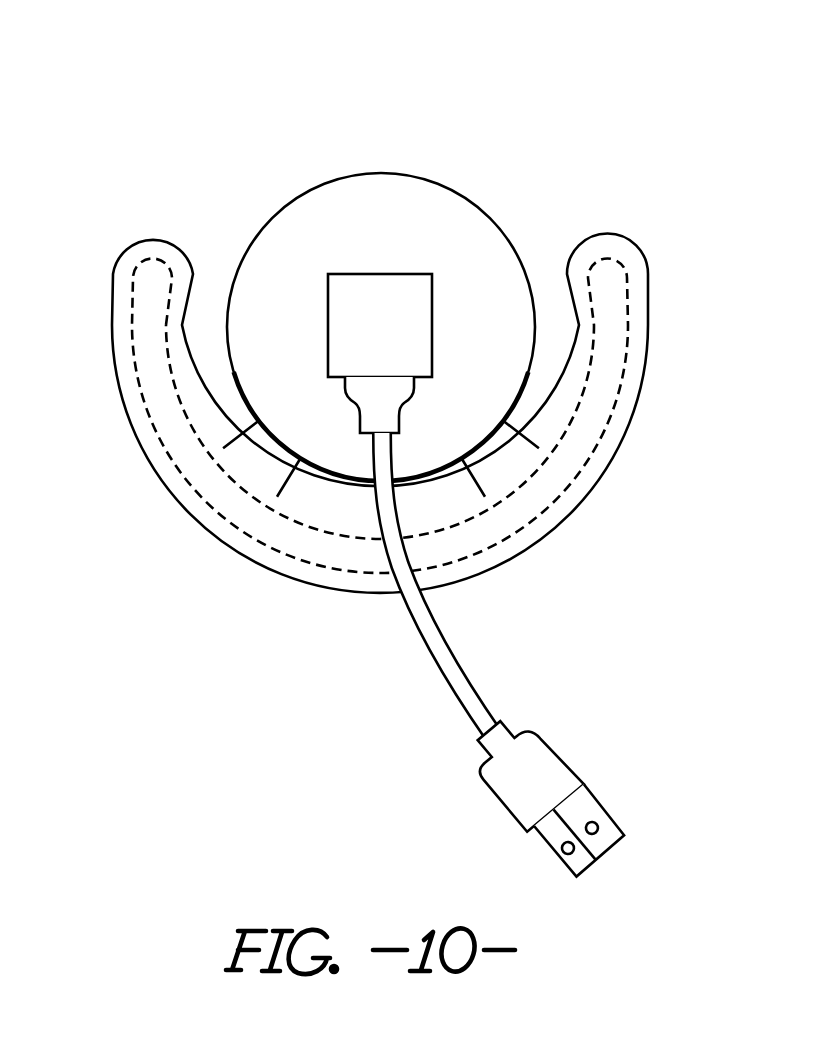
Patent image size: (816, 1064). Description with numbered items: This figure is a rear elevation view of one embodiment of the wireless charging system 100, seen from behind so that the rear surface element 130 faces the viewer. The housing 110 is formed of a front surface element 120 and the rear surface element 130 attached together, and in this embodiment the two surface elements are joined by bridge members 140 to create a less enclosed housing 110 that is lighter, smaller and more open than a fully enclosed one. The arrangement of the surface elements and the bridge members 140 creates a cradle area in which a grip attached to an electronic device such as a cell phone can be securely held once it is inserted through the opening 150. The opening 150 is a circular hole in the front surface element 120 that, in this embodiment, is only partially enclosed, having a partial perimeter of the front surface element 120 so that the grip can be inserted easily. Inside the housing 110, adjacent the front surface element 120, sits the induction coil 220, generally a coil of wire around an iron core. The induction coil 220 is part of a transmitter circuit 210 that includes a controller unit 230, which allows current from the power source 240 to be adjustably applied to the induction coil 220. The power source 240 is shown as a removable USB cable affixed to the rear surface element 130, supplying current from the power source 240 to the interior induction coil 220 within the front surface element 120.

The wireless charging system 100 is at (375, 448).
The housing 110 is at (282, 240).
The front surface element 120 is at (613, 233).
The rear surface element 130 is at (382, 203).
The bridge members 140 is at (258, 458).
The opening 150 is at (347, 492).
The transmitter circuit 210 is at (368, 297).
The induction coil 220 is at (133, 413).
The controller unit 230 is at (402, 303).
The power source 240 is at (383, 400).